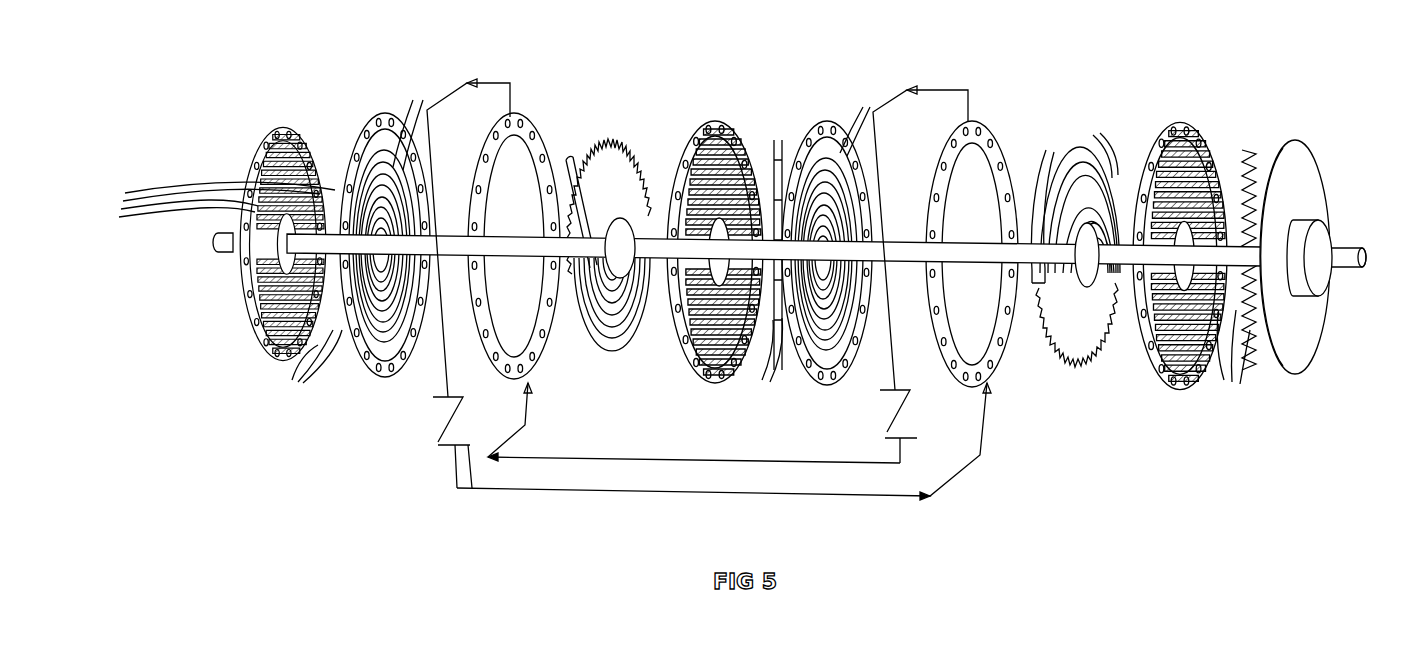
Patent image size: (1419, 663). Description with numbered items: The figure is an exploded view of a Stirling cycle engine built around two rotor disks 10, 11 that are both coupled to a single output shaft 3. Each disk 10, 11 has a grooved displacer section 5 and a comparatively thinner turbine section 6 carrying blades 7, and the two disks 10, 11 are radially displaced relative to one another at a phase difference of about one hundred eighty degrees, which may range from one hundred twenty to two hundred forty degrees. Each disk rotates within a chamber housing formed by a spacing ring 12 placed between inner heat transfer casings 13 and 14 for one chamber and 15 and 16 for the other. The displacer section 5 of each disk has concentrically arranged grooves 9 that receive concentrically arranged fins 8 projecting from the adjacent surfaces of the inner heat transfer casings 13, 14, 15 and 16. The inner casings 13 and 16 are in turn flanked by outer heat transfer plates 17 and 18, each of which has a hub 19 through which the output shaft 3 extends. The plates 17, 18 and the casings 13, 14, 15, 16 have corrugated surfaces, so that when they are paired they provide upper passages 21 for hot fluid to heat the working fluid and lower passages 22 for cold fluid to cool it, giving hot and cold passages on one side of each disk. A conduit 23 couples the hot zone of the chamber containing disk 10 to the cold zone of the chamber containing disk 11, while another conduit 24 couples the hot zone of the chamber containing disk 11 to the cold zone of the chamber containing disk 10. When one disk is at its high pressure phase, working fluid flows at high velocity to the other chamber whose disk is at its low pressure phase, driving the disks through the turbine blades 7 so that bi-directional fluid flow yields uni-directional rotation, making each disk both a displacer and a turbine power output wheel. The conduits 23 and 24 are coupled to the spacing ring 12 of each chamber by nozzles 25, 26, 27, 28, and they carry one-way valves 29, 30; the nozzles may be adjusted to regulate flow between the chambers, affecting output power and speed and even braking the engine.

The output shaft 3 is at (1358, 257).
The displacer section 5 is at (632, 352).
The turbine section 6 is at (625, 185).
The blades 7 is at (614, 145).
The fins 8 is at (632, 121).
The grooves 9 is at (839, 188).
The rotor disk 10 is at (603, 366).
The rotor disk 11 is at (1088, 368).
The spacing ring 12 is at (528, 118).
The inner heat transfer casing 13 is at (385, 115).
The inner heat transfer casing 14 is at (715, 120).
The inner heat transfer casing 15 is at (826, 120).
The inner heat transfer casing 16 is at (1178, 124).
The outer heat transfer plate 17 is at (287, 128).
The outer heat transfer plate 18 is at (1296, 140).
The hub 19 is at (1312, 225).
The upper passages 21 is at (1250, 108).
The lower passages 22 is at (759, 355).
The conduit 23 is at (682, 495).
The conduit 24 is at (680, 459).
The nozzle 25 is at (512, 115).
The nozzle 26 is at (970, 120).
The nozzle 27 is at (528, 384).
The nozzle 28 is at (986, 384).
The one-way valve 29 is at (482, 428).
The one-way valve 30 is at (930, 420).